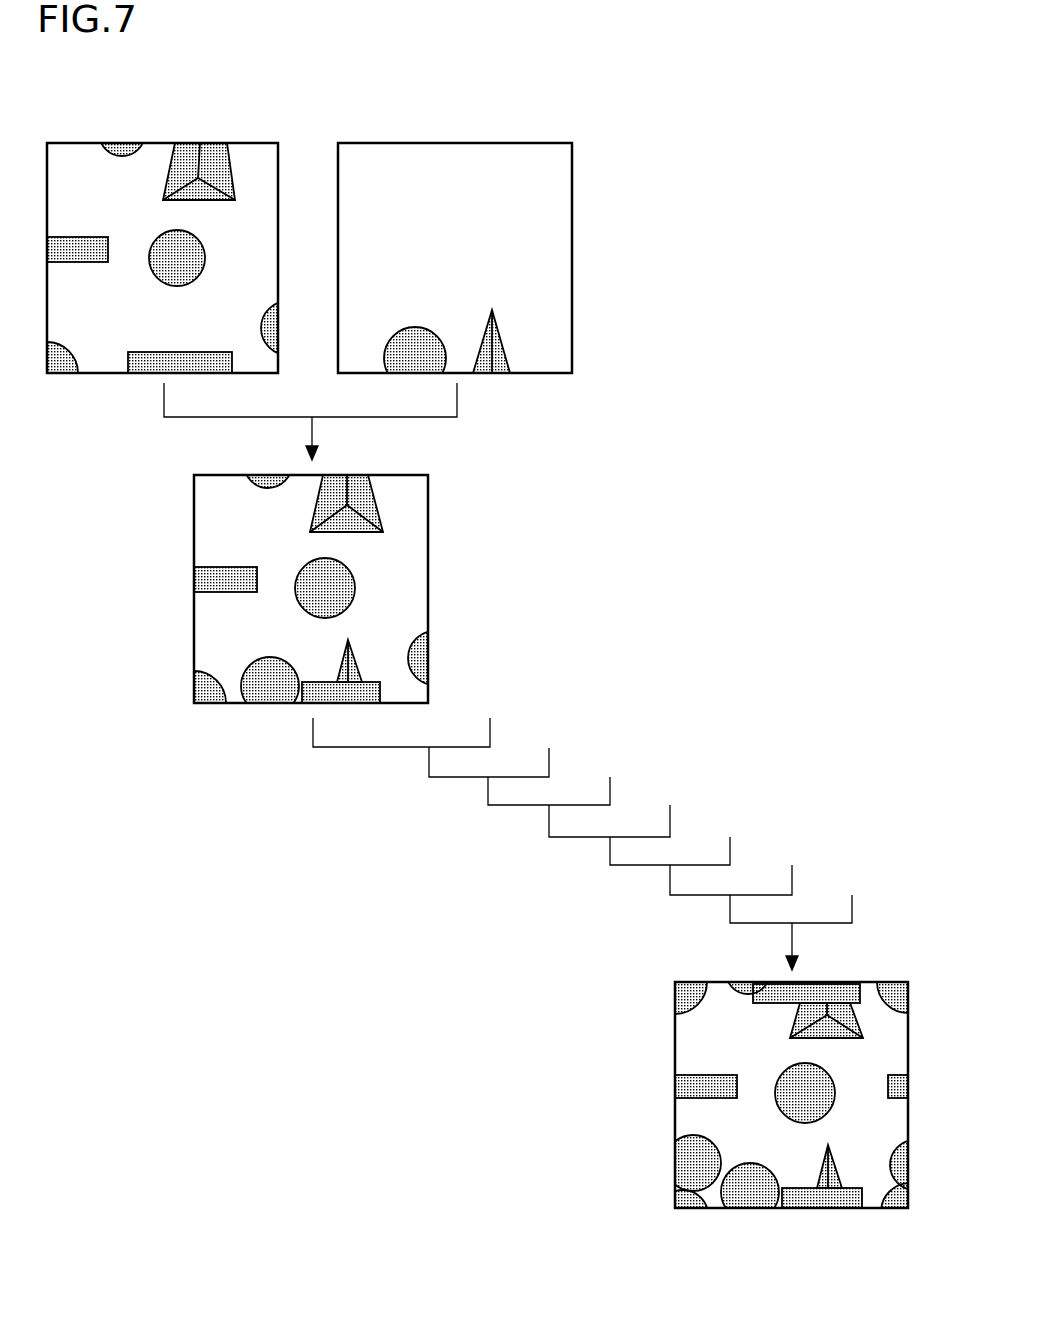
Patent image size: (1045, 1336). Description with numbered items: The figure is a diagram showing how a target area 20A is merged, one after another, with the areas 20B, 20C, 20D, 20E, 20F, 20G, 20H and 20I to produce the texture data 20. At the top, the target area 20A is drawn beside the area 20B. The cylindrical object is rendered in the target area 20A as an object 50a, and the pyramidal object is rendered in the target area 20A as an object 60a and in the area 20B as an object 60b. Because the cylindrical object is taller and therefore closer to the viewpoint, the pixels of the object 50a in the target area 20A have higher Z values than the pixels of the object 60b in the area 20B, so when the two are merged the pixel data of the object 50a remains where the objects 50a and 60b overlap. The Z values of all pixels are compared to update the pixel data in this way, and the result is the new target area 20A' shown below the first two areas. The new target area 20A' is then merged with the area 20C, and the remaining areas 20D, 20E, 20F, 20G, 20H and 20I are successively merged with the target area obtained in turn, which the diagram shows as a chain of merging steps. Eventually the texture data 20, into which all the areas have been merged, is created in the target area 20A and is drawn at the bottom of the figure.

The target area 20A is at (165, 244).
The area 20B is at (453, 143).
The object 60a is at (217, 203).
The object 50a is at (200, 352).
The object 60b is at (500, 330).
The new target area 20A' is at (342, 587).
The area 20C is at (411, 715).
The area 20D is at (499, 745).
The area 20E is at (559, 774).
The area 20F is at (620, 805).
The area 20G is at (681, 833).
The area 20H is at (741, 863).
The area 20I is at (798, 891).
The texture data 20 is at (792, 1209).